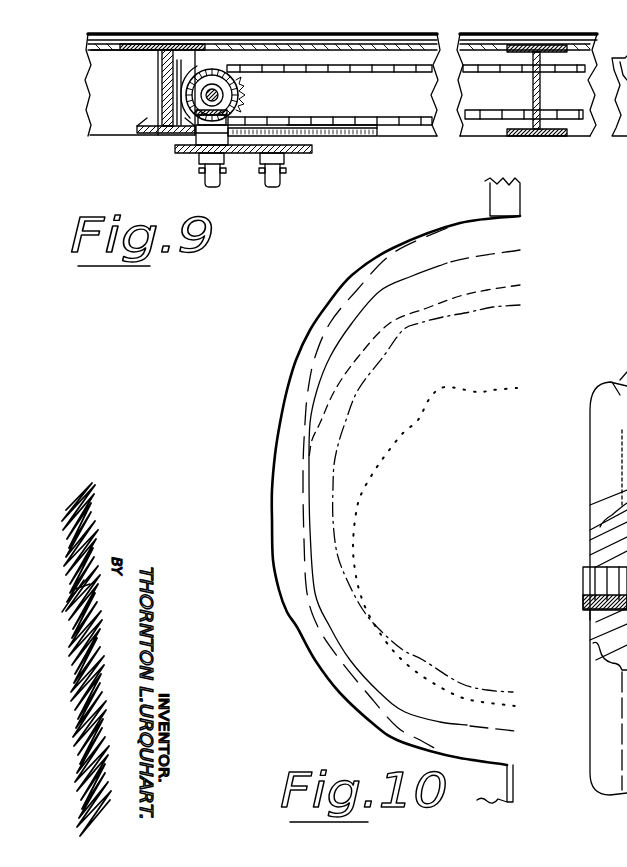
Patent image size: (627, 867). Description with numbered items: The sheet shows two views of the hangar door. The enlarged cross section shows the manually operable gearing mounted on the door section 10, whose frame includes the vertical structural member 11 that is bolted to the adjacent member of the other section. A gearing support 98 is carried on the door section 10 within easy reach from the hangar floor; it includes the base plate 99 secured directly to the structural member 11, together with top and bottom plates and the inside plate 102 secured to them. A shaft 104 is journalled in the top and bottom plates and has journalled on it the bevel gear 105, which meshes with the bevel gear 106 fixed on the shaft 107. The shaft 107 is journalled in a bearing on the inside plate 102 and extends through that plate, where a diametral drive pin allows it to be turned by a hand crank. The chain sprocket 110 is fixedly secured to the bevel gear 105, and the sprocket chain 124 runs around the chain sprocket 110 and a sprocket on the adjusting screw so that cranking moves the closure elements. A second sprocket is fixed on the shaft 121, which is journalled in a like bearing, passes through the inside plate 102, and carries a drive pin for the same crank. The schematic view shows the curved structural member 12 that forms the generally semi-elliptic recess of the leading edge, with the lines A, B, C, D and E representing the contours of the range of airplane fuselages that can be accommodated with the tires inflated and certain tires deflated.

In FIG. 9, the door section 10 is at (257, 57).
In FIG. 9, the vertical structural member 11 is at (163, 50).
In FIG. 9, the base plate 99 is at (162, 99).
In FIG. 9, the shaft 104 is at (238, 79).
In FIG. 9, the bevel gear 105 is at (245, 93).
In FIG. 9, the chain sprocket 110 is at (228, 113).
In FIG. 9, the sprocket chain 124 is at (366, 68).
In FIG. 9, the gearing support 98 is at (325, 148).
In FIG. 9, the inside plate 102 is at (302, 154).
In FIG. 9, the bevel gear 106 is at (192, 133).
In FIG. 9, the shaft 107 is at (205, 178).
In FIG. 9, the shaft 121 is at (268, 178).
In FIG. 10, the curved structural member 12 is at (272, 469).
In FIG. 10, the fuselage contour line A is at (383, 262).
In FIG. 10, the fuselage contour line B is at (498, 250).
In FIG. 10, the fuselage contour line C is at (490, 285).
In FIG. 10, the fuselage contour line D is at (490, 303).
In FIG. 10, the fuselage contour line E is at (440, 394).